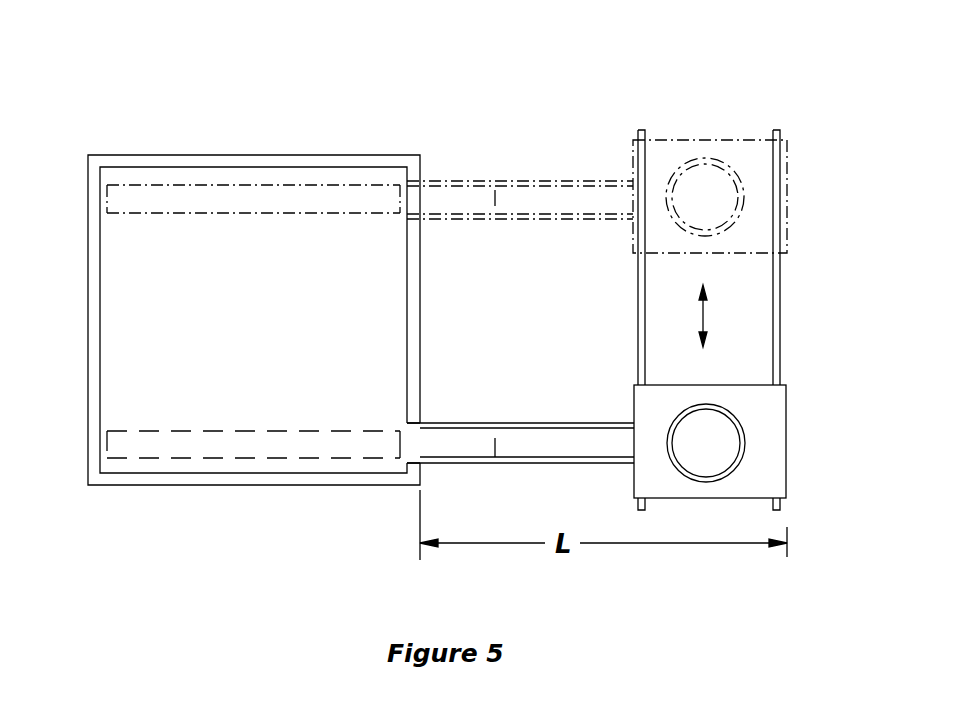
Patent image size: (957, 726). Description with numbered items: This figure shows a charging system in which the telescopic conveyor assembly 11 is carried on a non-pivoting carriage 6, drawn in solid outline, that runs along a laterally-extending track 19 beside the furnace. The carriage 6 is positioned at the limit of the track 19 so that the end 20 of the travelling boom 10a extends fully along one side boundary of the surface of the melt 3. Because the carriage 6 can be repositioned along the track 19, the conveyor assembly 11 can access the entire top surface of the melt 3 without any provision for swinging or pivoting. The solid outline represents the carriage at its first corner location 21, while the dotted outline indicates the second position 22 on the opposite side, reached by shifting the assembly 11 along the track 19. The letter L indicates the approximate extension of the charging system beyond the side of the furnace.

The melt 3 is at (367, 317).
The travelling boom 10a is at (227, 460).
The end of the travelling boom 20 is at (400, 443).
The telescopic conveyor assembly 11 is at (560, 442).
The non-pivoting carriage 6 is at (633, 402).
The laterally-extending track 19 is at (639, 320).
The first corner location 21 is at (706, 443).
The second position 22 is at (705, 197).